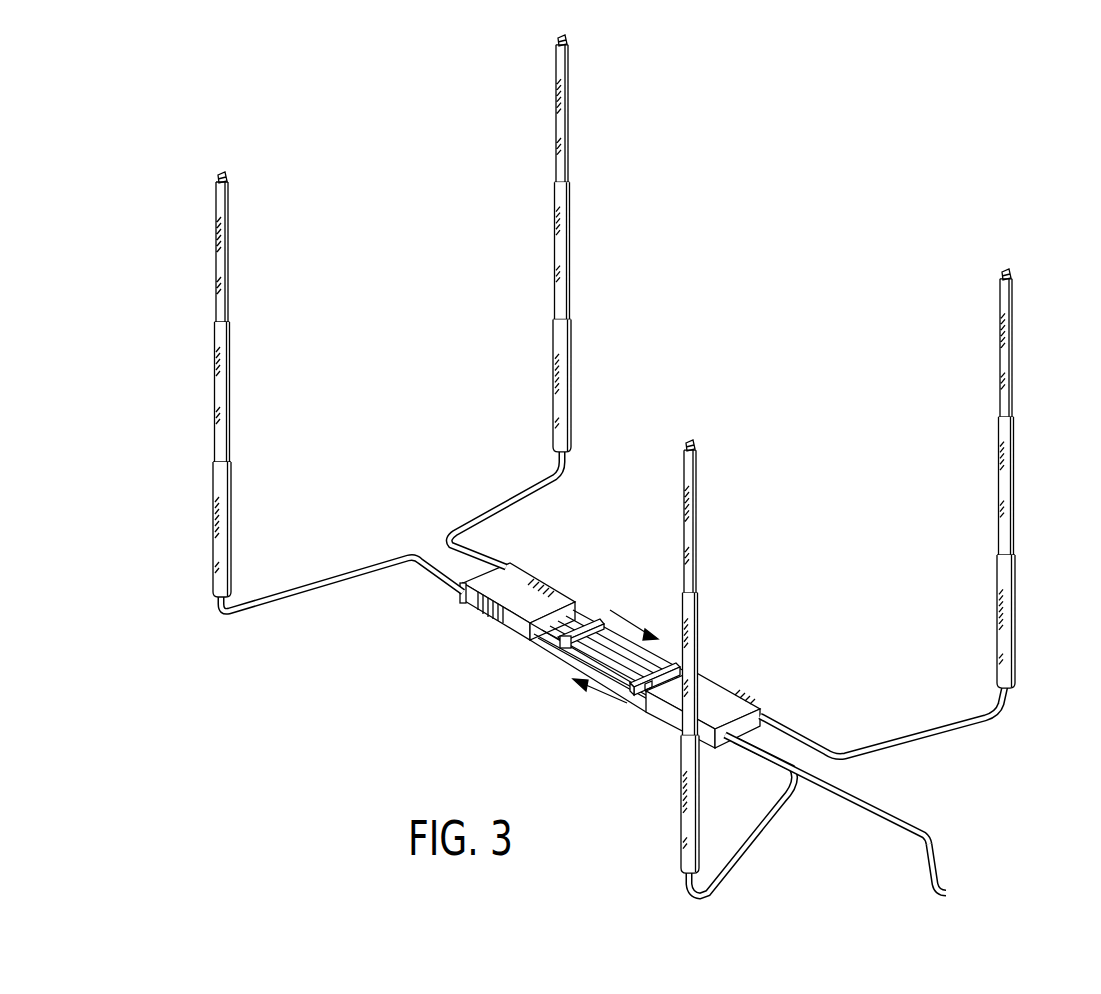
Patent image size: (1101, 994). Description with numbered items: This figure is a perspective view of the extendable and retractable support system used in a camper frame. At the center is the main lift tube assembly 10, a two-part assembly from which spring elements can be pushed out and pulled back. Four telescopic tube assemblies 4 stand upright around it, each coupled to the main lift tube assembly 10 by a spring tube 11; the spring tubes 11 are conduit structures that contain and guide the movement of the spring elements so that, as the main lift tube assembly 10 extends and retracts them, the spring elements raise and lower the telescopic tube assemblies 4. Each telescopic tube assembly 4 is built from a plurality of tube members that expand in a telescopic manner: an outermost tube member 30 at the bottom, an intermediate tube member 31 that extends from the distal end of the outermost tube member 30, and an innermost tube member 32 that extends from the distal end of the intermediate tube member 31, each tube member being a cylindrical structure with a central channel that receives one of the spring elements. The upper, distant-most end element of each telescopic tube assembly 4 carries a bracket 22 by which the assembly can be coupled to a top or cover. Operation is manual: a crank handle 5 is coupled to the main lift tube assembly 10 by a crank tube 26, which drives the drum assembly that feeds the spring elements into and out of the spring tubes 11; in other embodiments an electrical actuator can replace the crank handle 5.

The telescopic tube assembly 4 is at (621, 457).
The manual crank handle 5 is at (942, 882).
The main lift tube assembly 10 is at (517, 593).
The spring tube 11 is at (333, 597).
The bracket 22 is at (225, 172).
The crank tube 26 is at (845, 788).
The outermost tube member 30 is at (191, 529).
The intermediate tube member 31 is at (192, 380).
The innermost tube member 32 is at (191, 252).